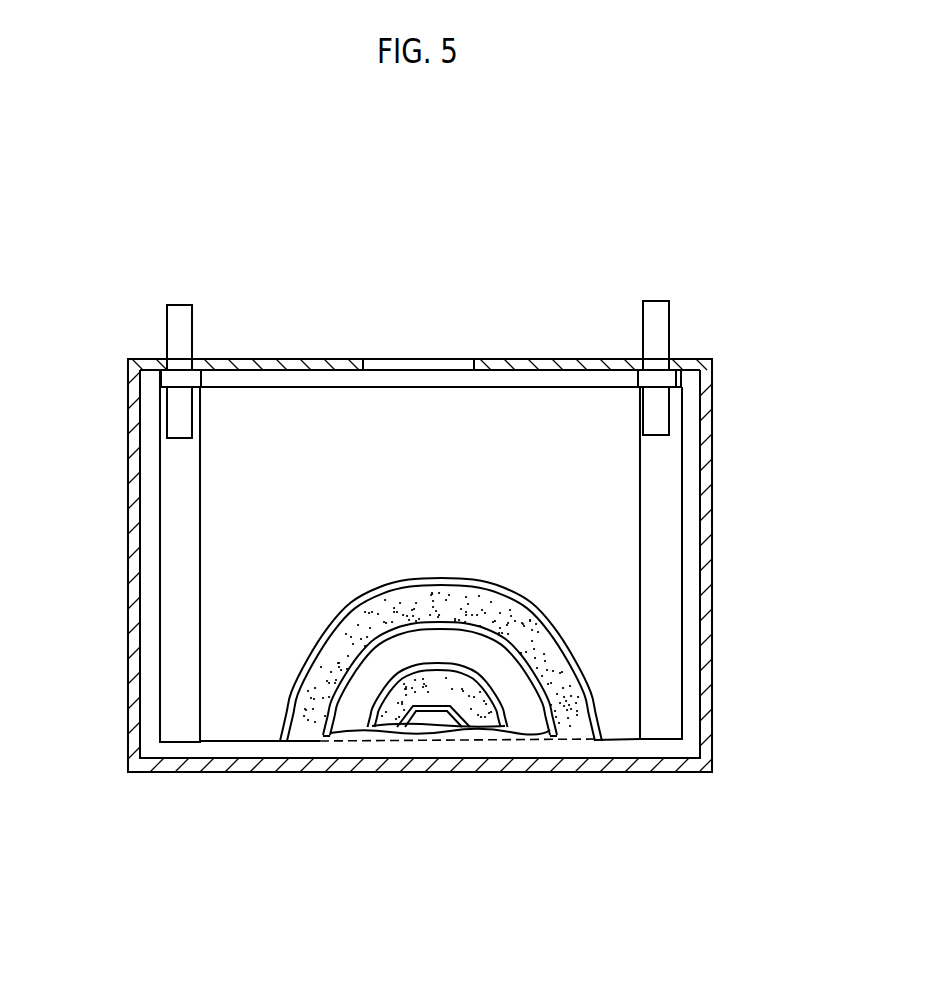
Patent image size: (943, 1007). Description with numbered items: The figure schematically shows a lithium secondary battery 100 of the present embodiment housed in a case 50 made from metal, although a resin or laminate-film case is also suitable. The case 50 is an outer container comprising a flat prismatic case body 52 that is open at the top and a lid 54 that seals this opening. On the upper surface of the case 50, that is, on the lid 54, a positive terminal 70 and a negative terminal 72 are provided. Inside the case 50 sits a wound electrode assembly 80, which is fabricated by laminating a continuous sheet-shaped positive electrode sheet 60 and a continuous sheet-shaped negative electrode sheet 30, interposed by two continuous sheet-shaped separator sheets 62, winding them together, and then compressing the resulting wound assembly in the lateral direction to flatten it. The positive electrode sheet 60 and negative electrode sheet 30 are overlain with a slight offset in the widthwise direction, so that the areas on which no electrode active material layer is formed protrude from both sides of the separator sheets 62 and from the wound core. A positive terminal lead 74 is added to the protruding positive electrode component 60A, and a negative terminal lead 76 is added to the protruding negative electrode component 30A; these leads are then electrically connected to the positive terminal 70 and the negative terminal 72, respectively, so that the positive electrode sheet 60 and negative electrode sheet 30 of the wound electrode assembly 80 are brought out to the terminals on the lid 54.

The lithium secondary battery 100 is at (577, 190).
The case 50 is at (713, 513).
The case body 52 is at (707, 643).
The lid 54 is at (297, 365).
The positive terminal 70 is at (182, 318).
The negative terminal 72 is at (657, 318).
The positive terminal lead 74 is at (187, 423).
The negative terminal lead 76 is at (655, 418).
The protruding positive electrode component 60A is at (178, 598).
The protruding negative electrode component 30A is at (663, 617).
The positive electrode sheet 60 is at (253, 723).
The separator sheets 62 is at (297, 735).
The negative electrode sheet 30 is at (345, 725).
The wound electrode assembly 80 is at (615, 740).